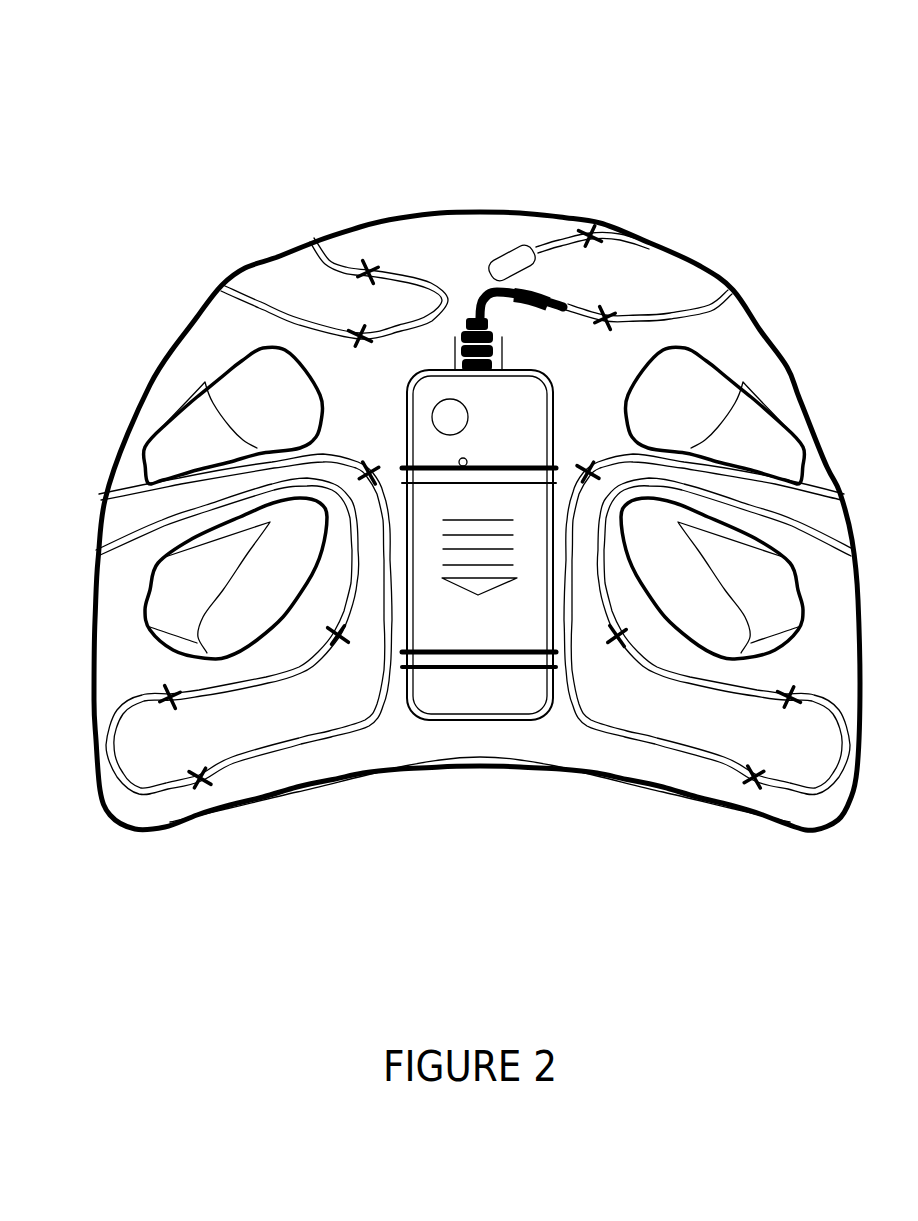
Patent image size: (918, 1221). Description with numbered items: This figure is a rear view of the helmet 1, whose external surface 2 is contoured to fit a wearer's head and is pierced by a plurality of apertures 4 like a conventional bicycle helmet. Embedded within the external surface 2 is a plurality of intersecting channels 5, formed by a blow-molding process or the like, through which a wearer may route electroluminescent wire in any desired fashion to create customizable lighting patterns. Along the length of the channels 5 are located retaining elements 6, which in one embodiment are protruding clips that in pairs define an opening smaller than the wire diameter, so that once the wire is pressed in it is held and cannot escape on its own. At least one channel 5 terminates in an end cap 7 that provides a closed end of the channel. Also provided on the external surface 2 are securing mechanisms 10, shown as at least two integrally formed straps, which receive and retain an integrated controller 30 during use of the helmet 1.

The helmet 1 is at (755, 87).
The external surface 2 is at (223, 333).
The apertures 4 is at (707, 407).
The channels 5 is at (340, 263).
The retaining elements 6 is at (210, 783).
The end cap 7 is at (507, 257).
The securing mechanism 10 is at (503, 470).
The integrated controller 30 is at (453, 693).